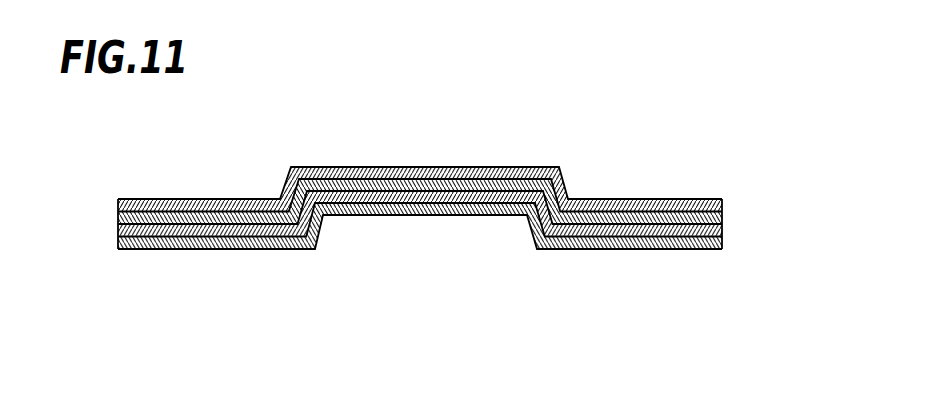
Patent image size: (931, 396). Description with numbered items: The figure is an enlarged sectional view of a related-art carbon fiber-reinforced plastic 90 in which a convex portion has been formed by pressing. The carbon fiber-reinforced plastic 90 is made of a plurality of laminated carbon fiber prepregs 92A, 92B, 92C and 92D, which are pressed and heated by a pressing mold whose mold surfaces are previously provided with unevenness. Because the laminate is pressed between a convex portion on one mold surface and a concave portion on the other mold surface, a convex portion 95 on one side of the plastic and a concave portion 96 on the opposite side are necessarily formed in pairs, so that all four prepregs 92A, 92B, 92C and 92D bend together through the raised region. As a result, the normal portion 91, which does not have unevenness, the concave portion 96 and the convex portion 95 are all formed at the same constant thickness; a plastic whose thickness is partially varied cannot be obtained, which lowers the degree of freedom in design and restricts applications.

The carbon fiber-reinforced plastic 90 is at (632, 158).
The normal portion 91 is at (201, 199).
The convex portion 95 is at (493, 167).
The concave portion 96 is at (428, 217).
The carbon fiber prepreg 92A is at (722, 249).
The carbon fiber prepreg 92B is at (722, 230).
The carbon fiber prepreg 92C is at (722, 215).
The carbon fiber prepreg 92D is at (721, 198).